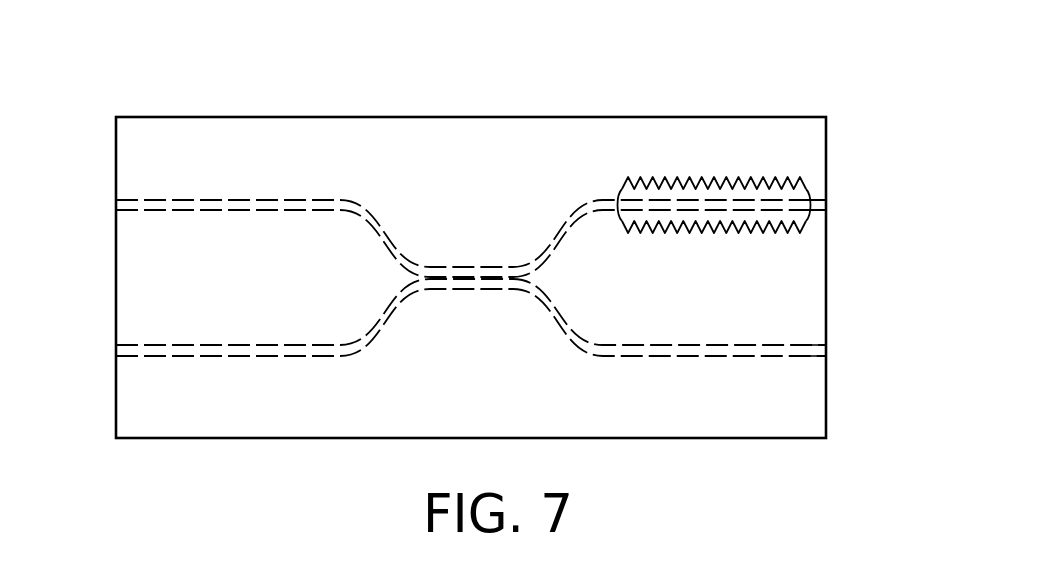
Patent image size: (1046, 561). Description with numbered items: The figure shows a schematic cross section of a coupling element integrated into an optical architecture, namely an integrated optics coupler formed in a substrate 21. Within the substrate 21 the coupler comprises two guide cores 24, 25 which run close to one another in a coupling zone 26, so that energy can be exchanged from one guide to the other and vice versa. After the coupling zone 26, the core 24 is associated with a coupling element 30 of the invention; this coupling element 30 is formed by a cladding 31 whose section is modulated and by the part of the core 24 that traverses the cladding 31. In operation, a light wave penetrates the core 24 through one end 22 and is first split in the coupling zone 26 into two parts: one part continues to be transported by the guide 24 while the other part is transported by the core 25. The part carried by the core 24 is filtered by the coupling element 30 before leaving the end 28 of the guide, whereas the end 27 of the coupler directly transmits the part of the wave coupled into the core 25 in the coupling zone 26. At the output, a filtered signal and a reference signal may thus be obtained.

The substrate 21 is at (178, 410).
The end of the core 22 is at (118, 206).
The guide core 24 is at (262, 196).
The guide core 25 is at (258, 360).
The coupling zone 26 is at (476, 266).
The end of the coupler 27 is at (826, 351).
The end of the guide 28 is at (826, 205).
The coupling element 30 is at (708, 173).
The cladding 31 is at (643, 178).